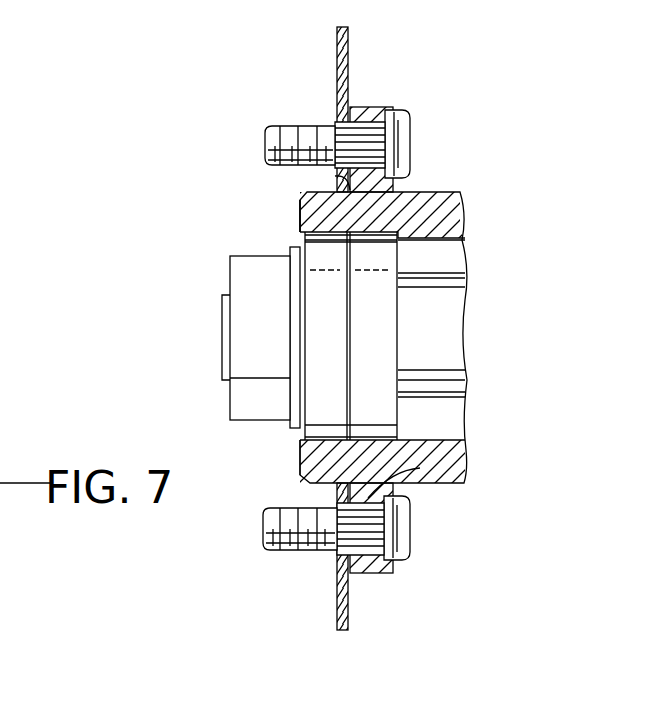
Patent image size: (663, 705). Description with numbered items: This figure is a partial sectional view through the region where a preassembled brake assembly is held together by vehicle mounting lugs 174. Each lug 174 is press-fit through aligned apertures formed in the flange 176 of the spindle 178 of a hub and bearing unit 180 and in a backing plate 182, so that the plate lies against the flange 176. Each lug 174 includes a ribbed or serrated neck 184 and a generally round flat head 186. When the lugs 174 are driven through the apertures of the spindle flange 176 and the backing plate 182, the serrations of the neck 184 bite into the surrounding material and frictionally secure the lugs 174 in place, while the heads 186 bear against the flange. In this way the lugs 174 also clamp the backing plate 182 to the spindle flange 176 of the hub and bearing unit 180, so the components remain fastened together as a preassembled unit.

The vehicle mounting lug 174 is at (280, 126).
The flange 176 is at (382, 107).
The spindle 178 is at (435, 192).
The hub and bearing unit 180 is at (212, 340).
The backing plate 182 is at (337, 53).
The serrated neck 184 is at (337, 176).
The flat head 186 is at (412, 127).